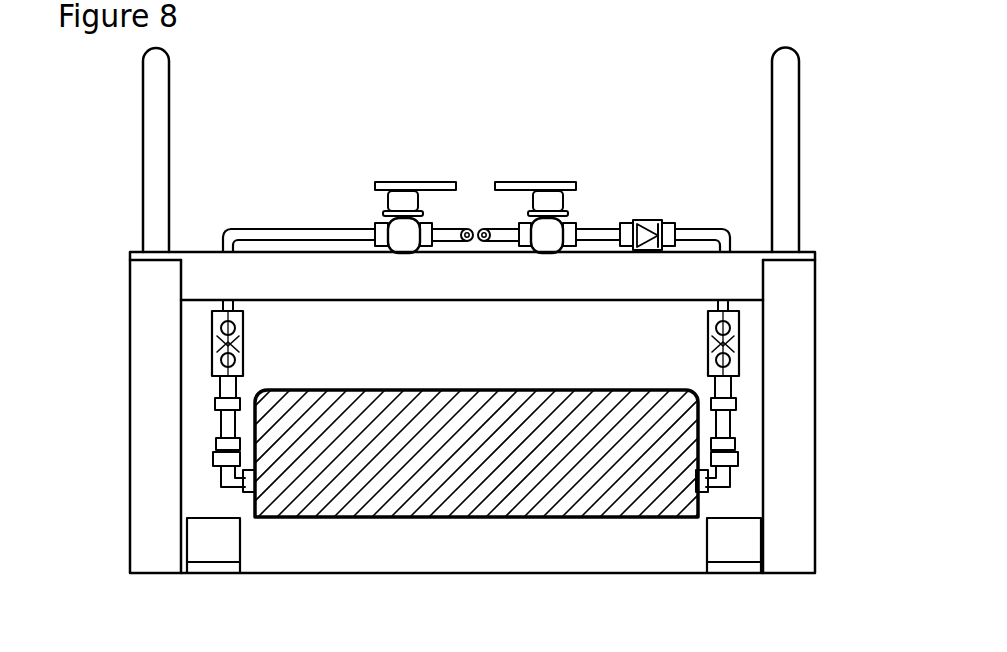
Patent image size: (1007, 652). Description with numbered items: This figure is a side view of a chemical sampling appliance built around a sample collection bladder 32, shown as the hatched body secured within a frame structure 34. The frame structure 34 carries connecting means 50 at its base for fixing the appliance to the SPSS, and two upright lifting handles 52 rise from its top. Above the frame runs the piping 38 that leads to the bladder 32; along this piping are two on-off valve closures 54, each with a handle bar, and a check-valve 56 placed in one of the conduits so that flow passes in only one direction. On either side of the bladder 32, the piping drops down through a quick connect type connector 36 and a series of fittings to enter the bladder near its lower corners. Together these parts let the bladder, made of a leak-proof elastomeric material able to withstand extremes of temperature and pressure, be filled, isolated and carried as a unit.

The sample collection bladder 32 is at (565, 450).
The frame structure 34 is at (793, 352).
The quick connect type connector 36 is at (706, 352).
The piping 38 is at (326, 238).
The connecting means 50 is at (740, 547).
The lifting handles 52 is at (157, 180).
The on-off valve closures 54 is at (550, 205).
The check-valve 56 is at (660, 223).